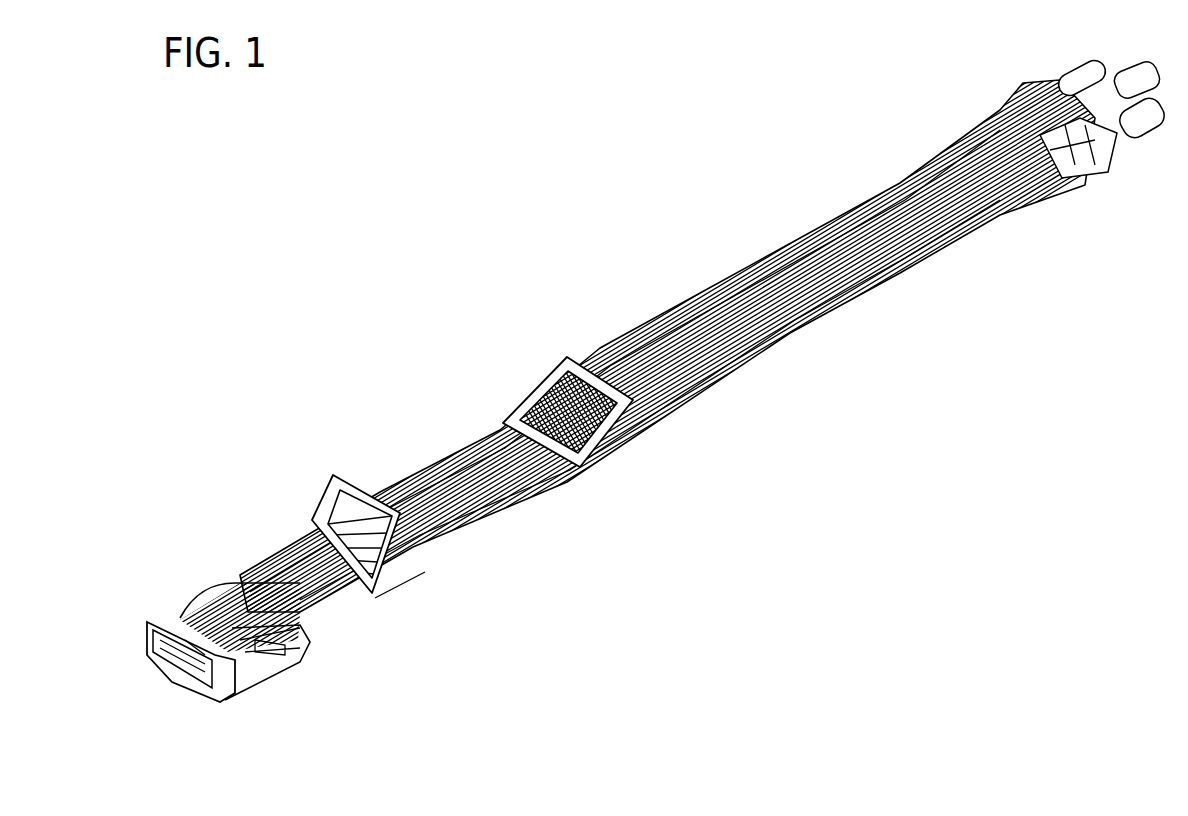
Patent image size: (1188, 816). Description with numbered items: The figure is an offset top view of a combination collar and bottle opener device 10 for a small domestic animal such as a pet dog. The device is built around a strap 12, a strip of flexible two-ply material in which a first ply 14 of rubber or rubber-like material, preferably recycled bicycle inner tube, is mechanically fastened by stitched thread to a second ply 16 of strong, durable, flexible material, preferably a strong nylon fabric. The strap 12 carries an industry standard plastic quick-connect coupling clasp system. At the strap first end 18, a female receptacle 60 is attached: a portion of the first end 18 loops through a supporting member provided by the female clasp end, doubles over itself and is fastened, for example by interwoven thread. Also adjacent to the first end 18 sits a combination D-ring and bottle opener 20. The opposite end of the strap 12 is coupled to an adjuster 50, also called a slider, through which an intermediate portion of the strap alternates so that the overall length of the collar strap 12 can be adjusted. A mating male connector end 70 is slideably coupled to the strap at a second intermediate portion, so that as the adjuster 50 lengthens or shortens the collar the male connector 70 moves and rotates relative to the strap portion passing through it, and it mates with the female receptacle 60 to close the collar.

The combination collar and bottle opener device 10 is at (244, 176).
The strap 12 is at (688, 278).
The first ply 14 is at (762, 360).
The second ply 16 is at (814, 262).
The strap first end 18 is at (400, 587).
The combination D-ring and bottle opener 20 is at (336, 482).
The adjuster 50 is at (566, 358).
The female receptacle 60 is at (170, 622).
The male connector end 70 is at (1140, 133).